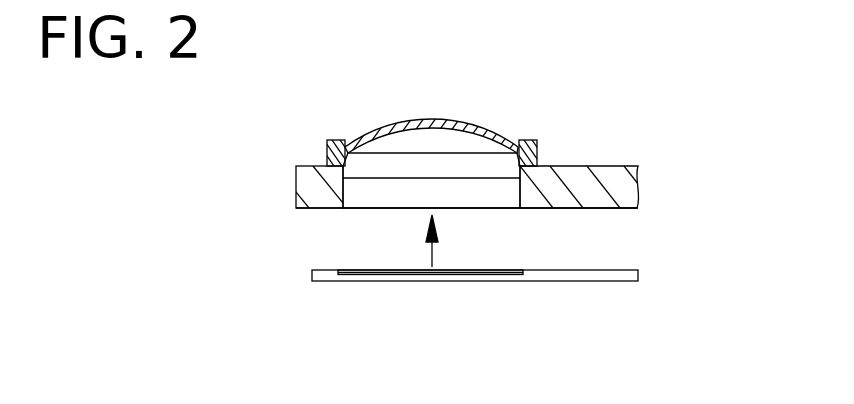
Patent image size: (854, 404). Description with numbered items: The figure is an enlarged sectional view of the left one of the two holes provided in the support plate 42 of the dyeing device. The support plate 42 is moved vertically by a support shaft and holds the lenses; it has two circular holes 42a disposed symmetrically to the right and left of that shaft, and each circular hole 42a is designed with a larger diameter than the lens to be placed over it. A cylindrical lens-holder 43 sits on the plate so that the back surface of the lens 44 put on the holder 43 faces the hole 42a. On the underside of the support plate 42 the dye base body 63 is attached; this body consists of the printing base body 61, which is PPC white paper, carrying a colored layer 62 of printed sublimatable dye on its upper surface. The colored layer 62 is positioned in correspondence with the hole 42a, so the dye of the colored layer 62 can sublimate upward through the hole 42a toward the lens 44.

The support plate 42 is at (304, 166).
The circular hole 42a is at (367, 215).
The cylindrical lens-holder 43 is at (539, 147).
The lens 44 is at (476, 125).
The printing base body 61 is at (323, 275).
The colored layer 62 is at (505, 271).
The dye base body 63 is at (515, 288).